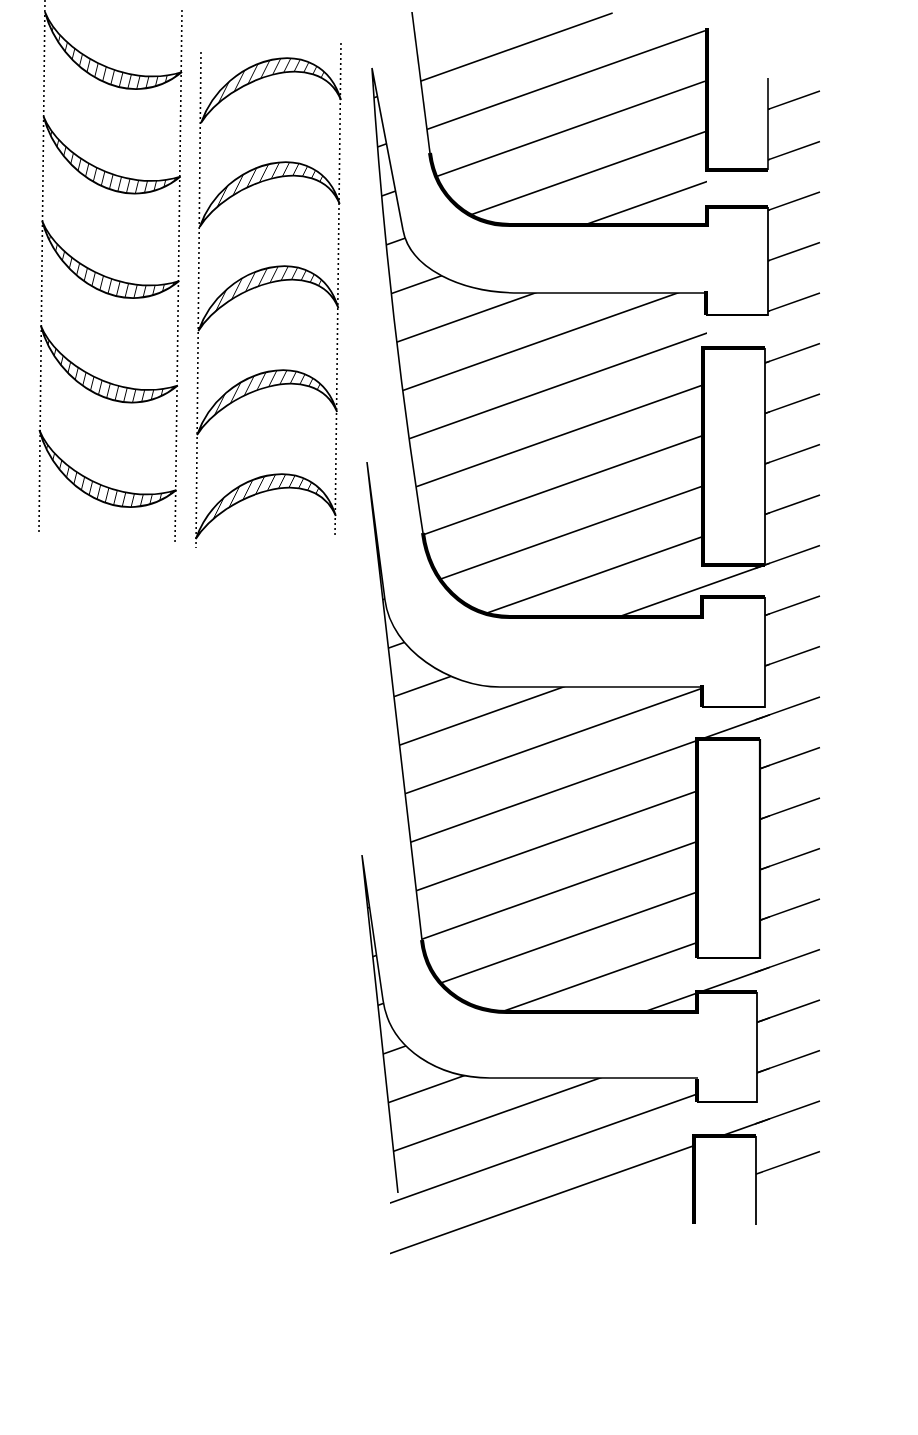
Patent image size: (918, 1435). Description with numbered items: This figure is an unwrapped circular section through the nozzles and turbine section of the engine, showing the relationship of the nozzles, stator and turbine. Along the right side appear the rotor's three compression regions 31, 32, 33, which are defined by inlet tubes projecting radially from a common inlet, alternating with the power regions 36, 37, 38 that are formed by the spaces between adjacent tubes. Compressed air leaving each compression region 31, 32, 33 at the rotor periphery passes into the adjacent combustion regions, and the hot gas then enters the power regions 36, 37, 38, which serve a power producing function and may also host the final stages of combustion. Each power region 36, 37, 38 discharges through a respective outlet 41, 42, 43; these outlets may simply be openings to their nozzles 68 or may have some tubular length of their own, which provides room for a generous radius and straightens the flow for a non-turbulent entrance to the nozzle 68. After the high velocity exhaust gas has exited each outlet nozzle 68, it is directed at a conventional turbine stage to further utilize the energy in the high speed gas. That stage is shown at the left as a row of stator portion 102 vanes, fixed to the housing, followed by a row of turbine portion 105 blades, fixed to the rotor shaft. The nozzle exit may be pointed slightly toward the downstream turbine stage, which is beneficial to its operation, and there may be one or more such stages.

The turbine portion 105 is at (78, 453).
The stator portion 102 is at (245, 453).
The nozzle 68 is at (414, 117).
The outlet 41 is at (553, 277).
The outlet 42 is at (605, 669).
The outlet 43 is at (574, 1062).
The compression region 31 is at (718, 108).
The power region 36 is at (716, 277).
The compression region 32 is at (713, 437).
The power region 37 is at (708, 672).
The compression region 33 is at (705, 869).
The power region 38 is at (705, 1064).